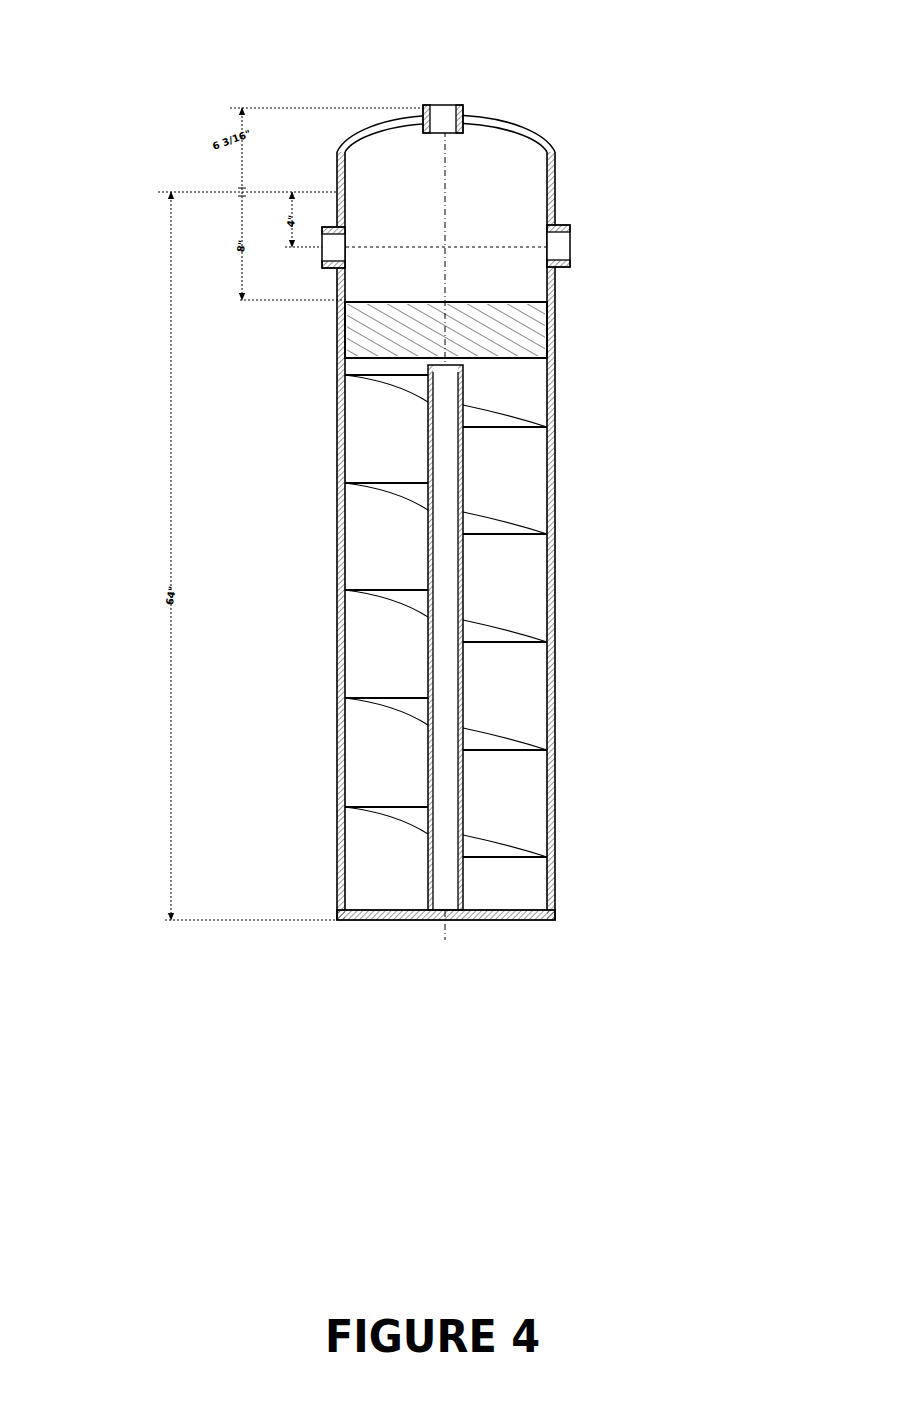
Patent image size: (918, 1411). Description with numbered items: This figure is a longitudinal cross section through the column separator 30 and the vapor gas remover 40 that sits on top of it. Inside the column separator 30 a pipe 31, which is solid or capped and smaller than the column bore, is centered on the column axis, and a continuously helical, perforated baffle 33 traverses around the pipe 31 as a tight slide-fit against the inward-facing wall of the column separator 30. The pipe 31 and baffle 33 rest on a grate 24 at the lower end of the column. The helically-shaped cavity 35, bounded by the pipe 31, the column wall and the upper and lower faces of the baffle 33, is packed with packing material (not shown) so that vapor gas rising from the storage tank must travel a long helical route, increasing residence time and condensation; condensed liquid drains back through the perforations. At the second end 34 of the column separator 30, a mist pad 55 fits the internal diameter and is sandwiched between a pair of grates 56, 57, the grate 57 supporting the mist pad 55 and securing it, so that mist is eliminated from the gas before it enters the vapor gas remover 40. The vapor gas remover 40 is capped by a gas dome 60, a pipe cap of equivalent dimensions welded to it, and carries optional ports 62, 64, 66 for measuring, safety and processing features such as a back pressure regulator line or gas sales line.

The grate 24 is at (507, 920).
The column separator 30 is at (560, 797).
The pipe 31 is at (457, 683).
The baffle 33 is at (512, 525).
The second end 34 is at (484, 378).
The cavity 35 is at (372, 755).
The vapor gas remover 40 is at (553, 216).
The mist pad 55 is at (523, 333).
The grate 56 is at (390, 302).
The grate 57 is at (500, 358).
The gas dome 60 is at (530, 133).
The port 62 is at (322, 265).
The port 64 is at (560, 237).
The port 66 is at (461, 103).